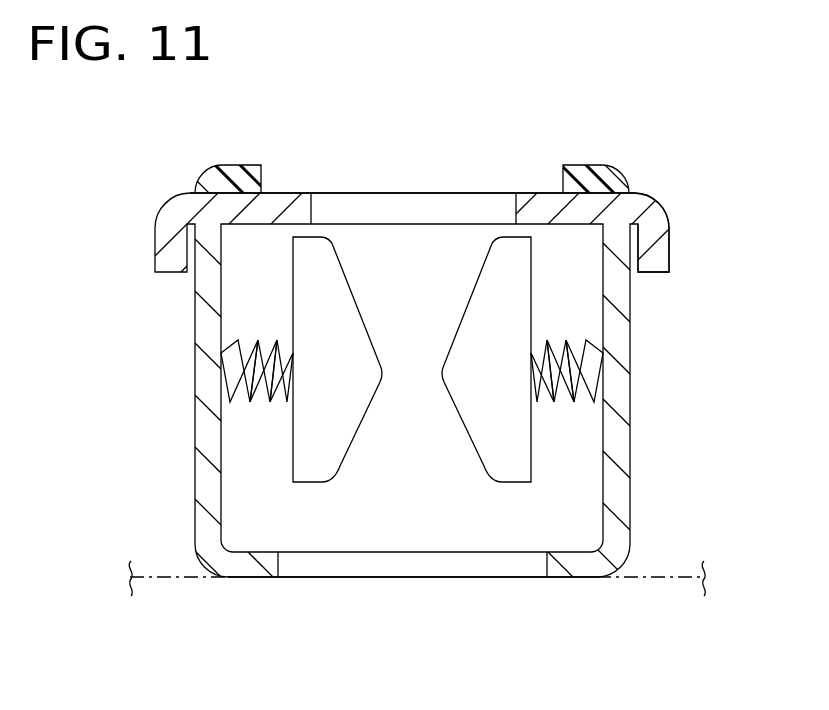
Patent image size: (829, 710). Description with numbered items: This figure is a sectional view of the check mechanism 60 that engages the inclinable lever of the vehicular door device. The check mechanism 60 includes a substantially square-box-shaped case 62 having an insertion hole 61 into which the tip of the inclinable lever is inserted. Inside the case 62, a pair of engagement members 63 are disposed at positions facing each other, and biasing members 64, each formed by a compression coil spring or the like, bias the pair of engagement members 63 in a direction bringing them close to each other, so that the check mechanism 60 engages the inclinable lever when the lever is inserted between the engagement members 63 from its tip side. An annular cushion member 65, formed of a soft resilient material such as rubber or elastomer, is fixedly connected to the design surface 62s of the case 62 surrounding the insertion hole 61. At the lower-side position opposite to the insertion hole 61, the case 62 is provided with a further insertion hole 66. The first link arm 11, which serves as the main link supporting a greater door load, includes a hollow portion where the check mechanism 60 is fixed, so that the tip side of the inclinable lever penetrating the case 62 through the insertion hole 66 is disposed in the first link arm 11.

The check mechanism 60 is at (388, 373).
The insertion hole 61 is at (513, 213).
The case 62 is at (650, 193).
The design surface 62s is at (298, 193).
The engagement member 63 is at (462, 300).
The biasing member 64 is at (258, 380).
The cushion member 65 is at (228, 169).
The insertion hole 66 is at (290, 577).
The first link arm 11 is at (655, 577).